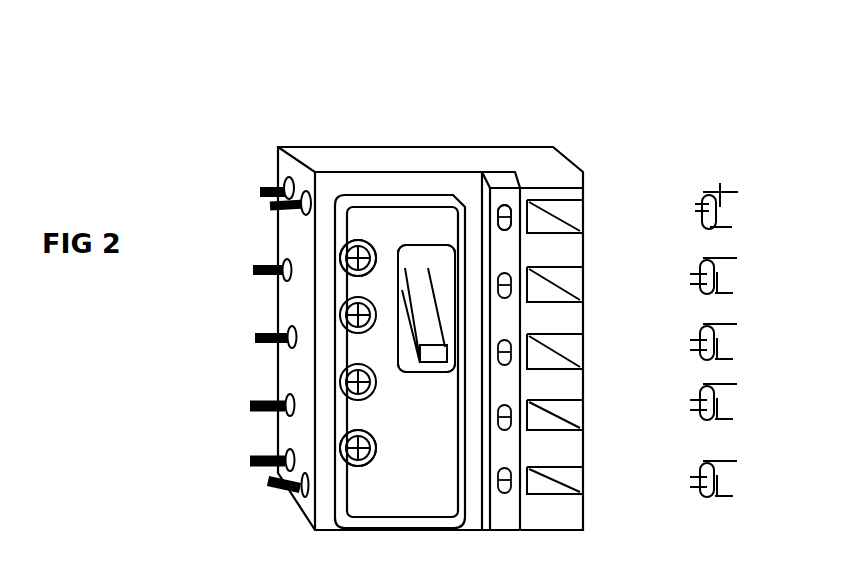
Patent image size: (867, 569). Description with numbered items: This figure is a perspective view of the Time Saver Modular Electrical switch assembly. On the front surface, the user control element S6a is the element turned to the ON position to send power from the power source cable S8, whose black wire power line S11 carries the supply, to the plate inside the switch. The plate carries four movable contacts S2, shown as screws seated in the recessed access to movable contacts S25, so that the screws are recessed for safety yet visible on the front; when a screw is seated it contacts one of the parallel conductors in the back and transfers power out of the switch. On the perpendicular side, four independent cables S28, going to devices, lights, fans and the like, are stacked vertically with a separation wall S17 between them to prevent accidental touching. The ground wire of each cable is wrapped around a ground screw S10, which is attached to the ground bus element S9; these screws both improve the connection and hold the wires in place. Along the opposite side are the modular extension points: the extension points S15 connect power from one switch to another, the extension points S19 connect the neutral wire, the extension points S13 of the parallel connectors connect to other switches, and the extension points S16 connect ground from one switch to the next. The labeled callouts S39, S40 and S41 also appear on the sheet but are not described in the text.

The user control element S6a is at (445, 312).
The ground screws S10 is at (500, 217).
The ground bus element S9 is at (505, 248).
The separation wall S17 is at (577, 515).
The movable contacts S2 is at (352, 449).
The recessed access to movable contacts S25 is at (370, 232).
The switch window S39 is at (433, 216).
The upper tooth section S40 is at (565, 206).
The black wire power line S11 is at (520, 163).
The housing side S41 is at (312, 301).
The extension points S15 is at (260, 192).
The extension points S19 is at (272, 206).
The extension points S13 is at (252, 273).
The extension points S16 is at (268, 487).
The power source cable S8 is at (717, 197).
The cables going to devices S28 is at (722, 480).